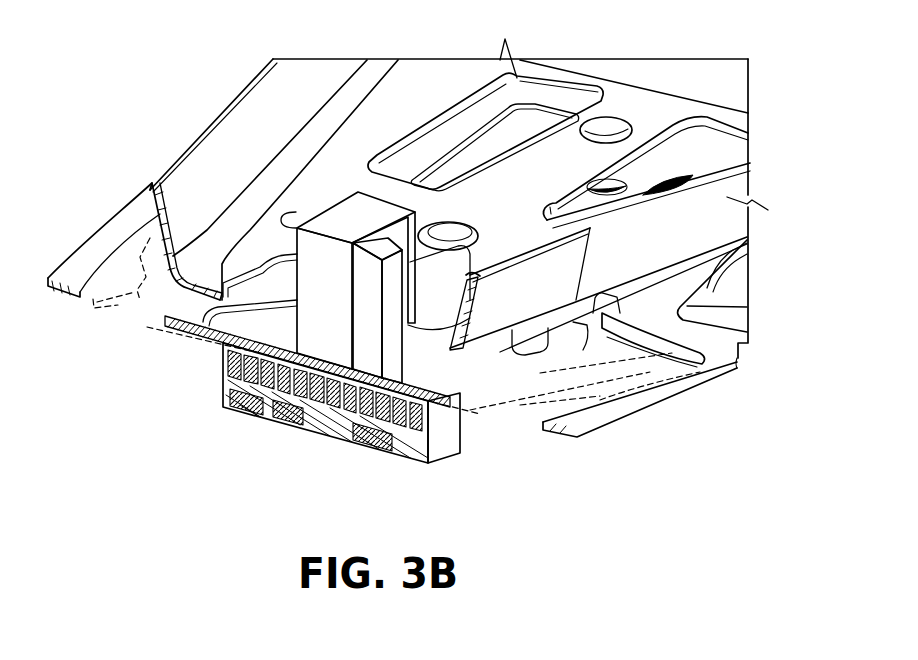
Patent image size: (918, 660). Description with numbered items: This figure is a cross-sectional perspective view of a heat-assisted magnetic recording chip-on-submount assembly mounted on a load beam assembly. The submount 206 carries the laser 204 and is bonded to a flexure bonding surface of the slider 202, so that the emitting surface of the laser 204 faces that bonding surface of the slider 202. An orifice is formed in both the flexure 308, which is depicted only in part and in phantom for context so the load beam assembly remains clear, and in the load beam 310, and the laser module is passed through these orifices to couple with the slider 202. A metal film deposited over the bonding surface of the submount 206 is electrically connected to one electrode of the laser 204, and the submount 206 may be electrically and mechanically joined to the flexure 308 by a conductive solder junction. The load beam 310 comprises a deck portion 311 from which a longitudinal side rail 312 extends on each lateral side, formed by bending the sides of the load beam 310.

The slider 202 is at (463, 430).
The laser 204 is at (375, 347).
The submount 206 is at (318, 313).
The flexure 308 is at (712, 363).
The load beam 310 is at (660, 90).
The deck portion 311 is at (452, 72).
The longitudinal side rail 312 is at (242, 124).